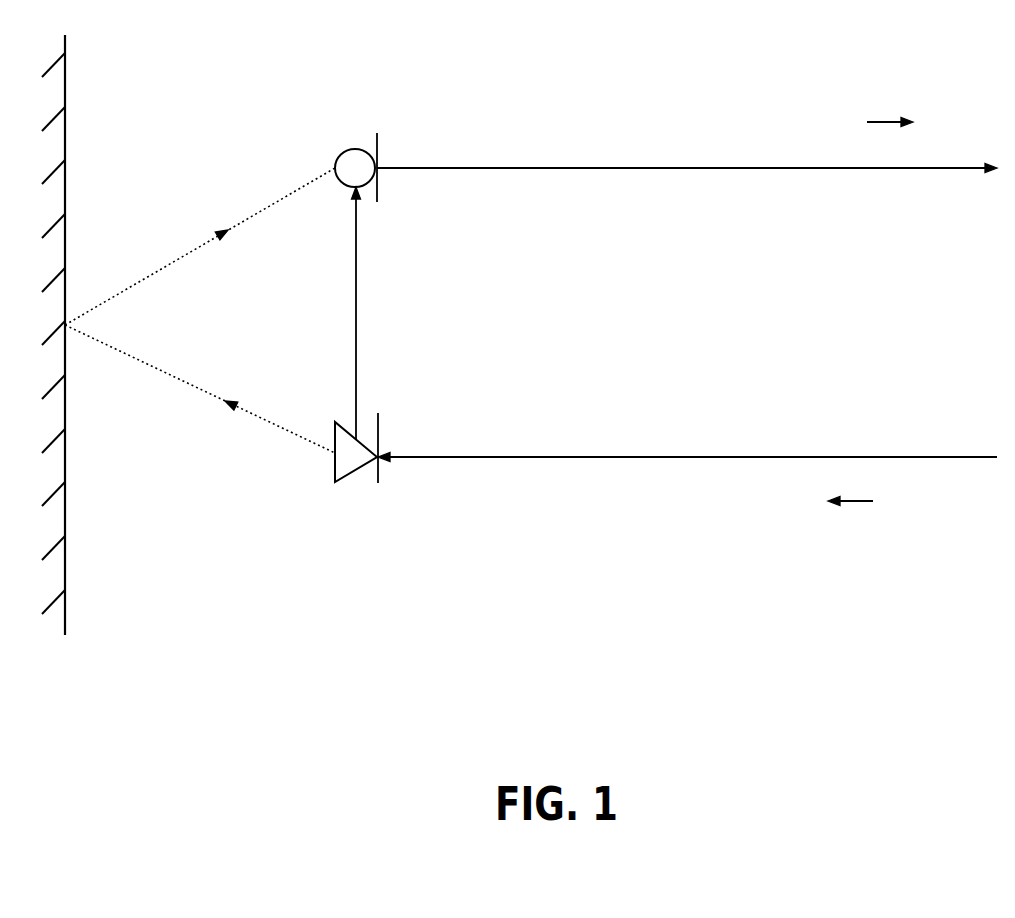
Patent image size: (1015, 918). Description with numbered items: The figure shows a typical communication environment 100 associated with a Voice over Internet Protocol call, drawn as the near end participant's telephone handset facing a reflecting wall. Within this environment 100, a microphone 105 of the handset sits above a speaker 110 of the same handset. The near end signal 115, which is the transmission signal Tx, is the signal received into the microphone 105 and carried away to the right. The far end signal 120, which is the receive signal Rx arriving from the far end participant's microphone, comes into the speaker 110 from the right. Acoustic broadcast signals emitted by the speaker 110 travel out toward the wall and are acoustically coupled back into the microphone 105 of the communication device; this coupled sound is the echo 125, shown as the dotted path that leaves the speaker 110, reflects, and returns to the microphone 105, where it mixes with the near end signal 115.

The communication environment 100 is at (822, 612).
The microphone 105 is at (355, 148).
The speaker 110 is at (338, 483).
The near end signal 115 is at (623, 167).
The far end signal 120 is at (620, 458).
The echo 125 is at (157, 271).